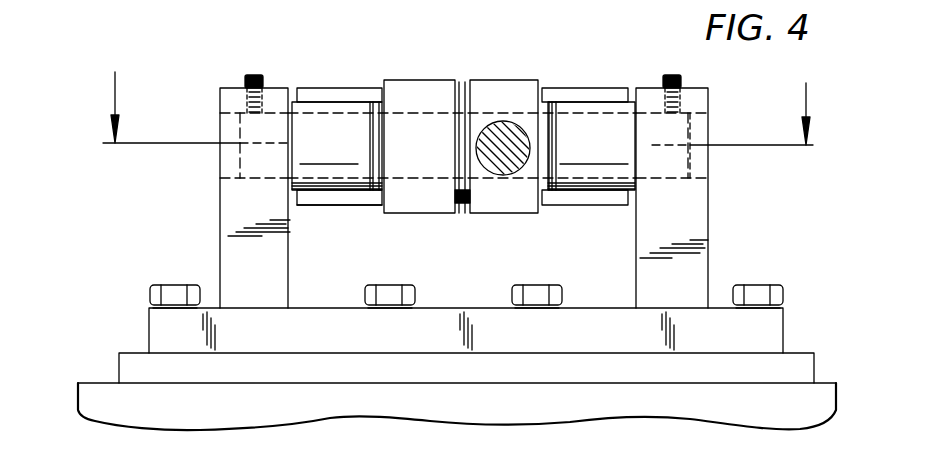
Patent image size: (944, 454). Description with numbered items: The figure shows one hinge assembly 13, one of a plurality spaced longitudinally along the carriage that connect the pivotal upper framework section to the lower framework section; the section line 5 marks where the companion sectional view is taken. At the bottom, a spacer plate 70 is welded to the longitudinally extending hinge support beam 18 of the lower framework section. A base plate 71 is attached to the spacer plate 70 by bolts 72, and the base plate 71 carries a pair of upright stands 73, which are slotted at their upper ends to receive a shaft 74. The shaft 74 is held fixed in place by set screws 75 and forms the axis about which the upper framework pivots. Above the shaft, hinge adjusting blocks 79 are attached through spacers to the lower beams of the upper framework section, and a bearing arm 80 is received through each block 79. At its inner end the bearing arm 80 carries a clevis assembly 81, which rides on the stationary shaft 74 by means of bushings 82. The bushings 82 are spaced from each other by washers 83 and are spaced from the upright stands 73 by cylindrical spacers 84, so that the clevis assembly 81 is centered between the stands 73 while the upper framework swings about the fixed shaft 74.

The hinge assembly 13 is at (292, 52).
The hinge support beam 18 is at (822, 399).
The spacer plate 70 is at (800, 366).
The base plate 71 is at (773, 325).
The bolts 72 is at (178, 284).
The upright stands 73 is at (240, 207).
The shaft 74 is at (678, 130).
The set screws 75 is at (252, 74).
The hinge adjusting blocks 79 is at (322, 206).
The bearing arm 80 is at (498, 124).
The clevis assembly 81 is at (430, 86).
The bushings 82 is at (378, 105).
The washers 83 is at (461, 80).
The cylindrical spacers 84 is at (335, 106).
The section line 5- 5 is at (458, 125).